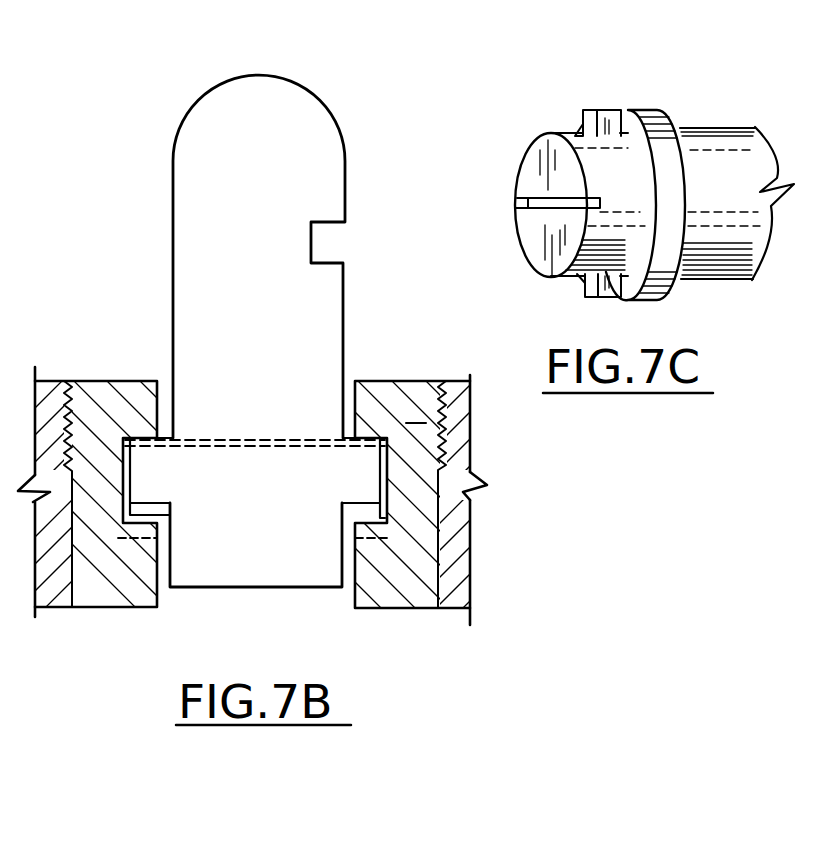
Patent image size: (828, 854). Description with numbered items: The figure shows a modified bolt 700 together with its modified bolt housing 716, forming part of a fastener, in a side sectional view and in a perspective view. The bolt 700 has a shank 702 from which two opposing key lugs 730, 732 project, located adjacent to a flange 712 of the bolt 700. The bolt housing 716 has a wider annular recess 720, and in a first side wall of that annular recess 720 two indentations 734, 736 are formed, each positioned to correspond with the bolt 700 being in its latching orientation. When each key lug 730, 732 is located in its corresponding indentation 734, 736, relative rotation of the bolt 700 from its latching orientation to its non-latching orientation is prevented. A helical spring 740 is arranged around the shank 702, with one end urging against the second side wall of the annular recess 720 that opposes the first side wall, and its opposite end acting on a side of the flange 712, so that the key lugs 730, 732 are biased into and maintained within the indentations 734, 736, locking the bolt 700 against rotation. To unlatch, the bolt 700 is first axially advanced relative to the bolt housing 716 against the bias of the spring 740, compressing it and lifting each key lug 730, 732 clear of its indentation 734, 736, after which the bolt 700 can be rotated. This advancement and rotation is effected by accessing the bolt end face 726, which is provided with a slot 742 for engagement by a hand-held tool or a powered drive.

In FIG. 7B, the bolt 700 is at (336, 107).
In FIG. 7C, the bolt 700 is at (726, 286).
In FIG. 7C, the shank 702 is at (718, 150).
In FIG. 7B, the flange 712 is at (362, 475).
In FIG. 7C, the flange 712 is at (643, 123).
In FIG. 7B, the bolt housing 716 is at (378, 385).
In FIG. 7B, the annular recess 720 is at (183, 492).
In FIG. 7C, the end face 726 is at (523, 233).
In FIG. 7C, the key lug 730 is at (593, 112).
In FIG. 7C, the key lug 732 is at (603, 293).
In FIG. 7B, the indentation 734 is at (130, 538).
In FIG. 7B, the indentation 736 is at (377, 540).
In FIG. 7B, the helical spring 740 is at (227, 437).
In FIG. 7C, the slot 742 is at (515, 204).